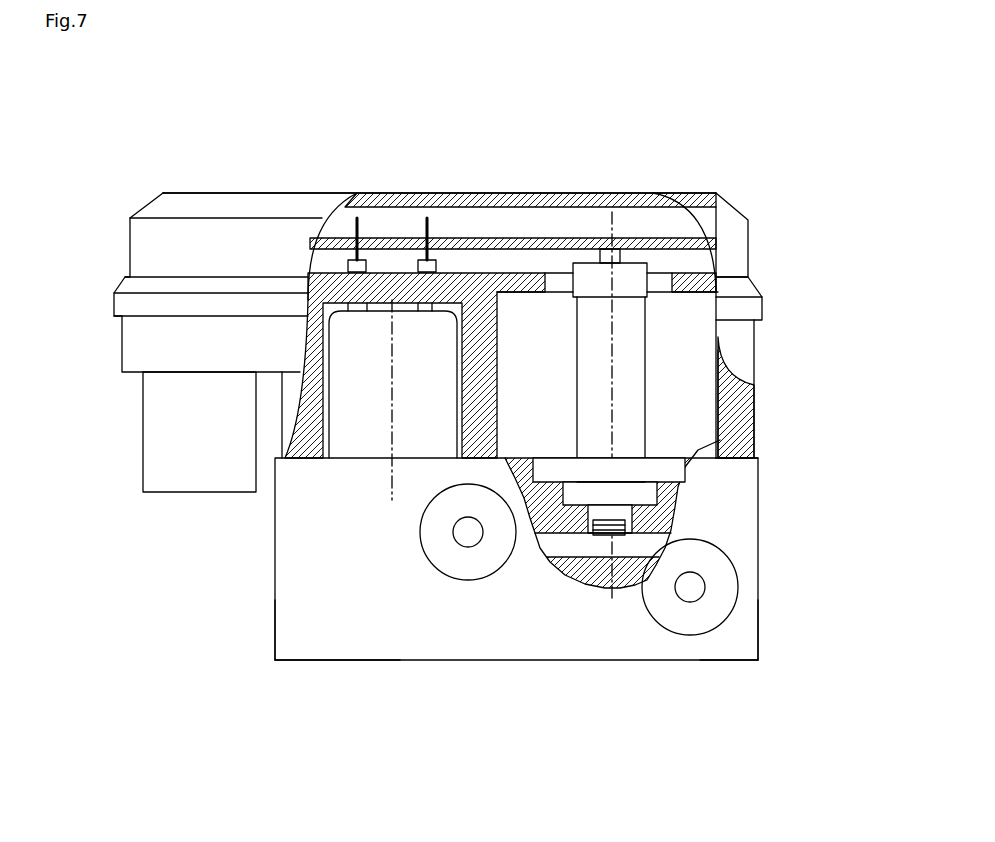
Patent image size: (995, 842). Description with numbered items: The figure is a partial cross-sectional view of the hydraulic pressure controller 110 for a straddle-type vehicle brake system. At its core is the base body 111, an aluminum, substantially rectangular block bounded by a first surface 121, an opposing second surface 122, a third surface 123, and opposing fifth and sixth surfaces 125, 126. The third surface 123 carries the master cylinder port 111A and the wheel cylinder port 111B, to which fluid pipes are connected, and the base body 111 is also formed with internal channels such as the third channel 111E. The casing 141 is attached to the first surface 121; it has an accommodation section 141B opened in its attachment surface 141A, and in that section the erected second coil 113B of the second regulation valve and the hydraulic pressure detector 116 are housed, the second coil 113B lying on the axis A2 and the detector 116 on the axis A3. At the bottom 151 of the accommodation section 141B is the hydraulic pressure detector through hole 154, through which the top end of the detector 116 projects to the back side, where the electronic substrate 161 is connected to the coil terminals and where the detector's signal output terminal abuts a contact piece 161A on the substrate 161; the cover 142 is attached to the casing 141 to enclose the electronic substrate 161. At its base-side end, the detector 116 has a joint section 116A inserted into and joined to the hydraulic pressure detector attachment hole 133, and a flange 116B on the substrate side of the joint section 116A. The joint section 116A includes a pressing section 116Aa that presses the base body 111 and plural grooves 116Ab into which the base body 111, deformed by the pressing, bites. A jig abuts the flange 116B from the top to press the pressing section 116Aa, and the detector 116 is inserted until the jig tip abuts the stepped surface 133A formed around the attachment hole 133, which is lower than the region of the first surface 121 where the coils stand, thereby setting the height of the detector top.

The liquid ejection head 110 is at (700, 150).
The base body 111 is at (298, 602).
The master cylinder port 111A is at (702, 634).
The wheel cylinder port 111B is at (455, 580).
The third channel 111E is at (612, 548).
The second coil 113B is at (362, 443).
The hydraulic pressure detector 116 is at (627, 372).
The joint section 116A is at (534, 638).
The pressing section 116Aa is at (597, 515).
The grooves 116Ab is at (610, 532).
The flange 116B is at (692, 510).
The first surface 121 is at (755, 449).
The second surface 122 is at (745, 662).
The third surface 123 is at (333, 648).
The fifth surface 125 is at (758, 645).
The sixth surface 126 is at (273, 645).
The hydraulic pressure detector attachment hole 133 is at (635, 497).
The stepped surface 133A is at (720, 440).
The casing 141 is at (138, 360).
The attachment surface 141A is at (730, 462).
The accommodation section 141B is at (318, 272).
The cover 142 is at (220, 197).
The bottom 151 is at (700, 273).
The hydraulic pressure detector through hole 154 is at (712, 243).
The electronic substrate 161 is at (475, 240).
The contact piece 161A is at (640, 192).
The axis A2 is at (393, 225).
The axis A3 is at (610, 240).